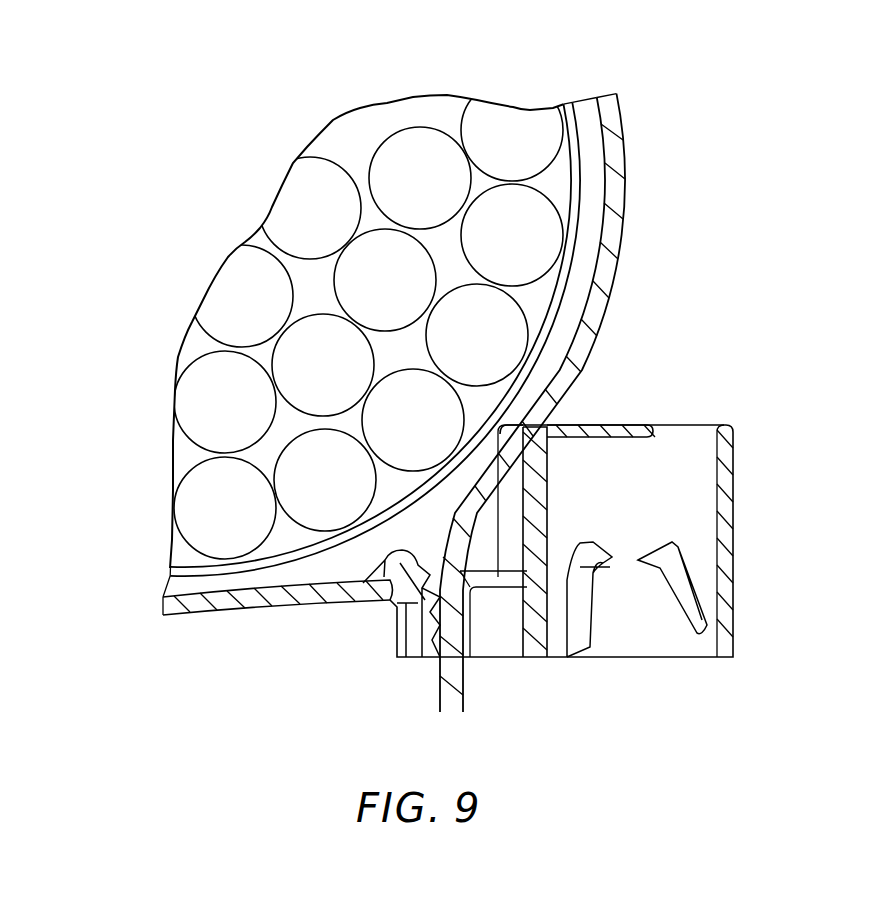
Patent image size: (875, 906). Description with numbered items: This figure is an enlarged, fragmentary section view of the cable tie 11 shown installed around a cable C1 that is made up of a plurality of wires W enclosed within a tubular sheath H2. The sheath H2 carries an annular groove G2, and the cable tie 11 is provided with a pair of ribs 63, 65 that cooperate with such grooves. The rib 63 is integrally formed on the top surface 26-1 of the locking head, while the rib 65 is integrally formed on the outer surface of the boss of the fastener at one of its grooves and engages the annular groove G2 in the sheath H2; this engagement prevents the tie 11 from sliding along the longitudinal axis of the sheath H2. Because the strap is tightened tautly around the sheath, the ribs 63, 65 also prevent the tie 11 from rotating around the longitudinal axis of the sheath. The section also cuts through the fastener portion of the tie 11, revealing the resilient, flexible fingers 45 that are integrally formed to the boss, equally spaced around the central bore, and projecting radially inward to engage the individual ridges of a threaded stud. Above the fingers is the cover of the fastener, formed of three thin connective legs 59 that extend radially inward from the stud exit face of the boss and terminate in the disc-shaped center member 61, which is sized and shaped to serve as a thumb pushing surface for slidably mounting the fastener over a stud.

The coil bundle C1 is at (371, 67).
The wires W is at (428, 170).
The sheath H2 is at (573, 200).
The annular groove G2 is at (582, 247).
The rib 65 is at (472, 390).
The connective legs 59 is at (572, 423).
The center member 61 is at (633, 425).
The fingers 45 is at (682, 582).
The rib 63 is at (363, 583).
The cable tie 11 is at (220, 617).
The top surface 26-1 is at (397, 607).